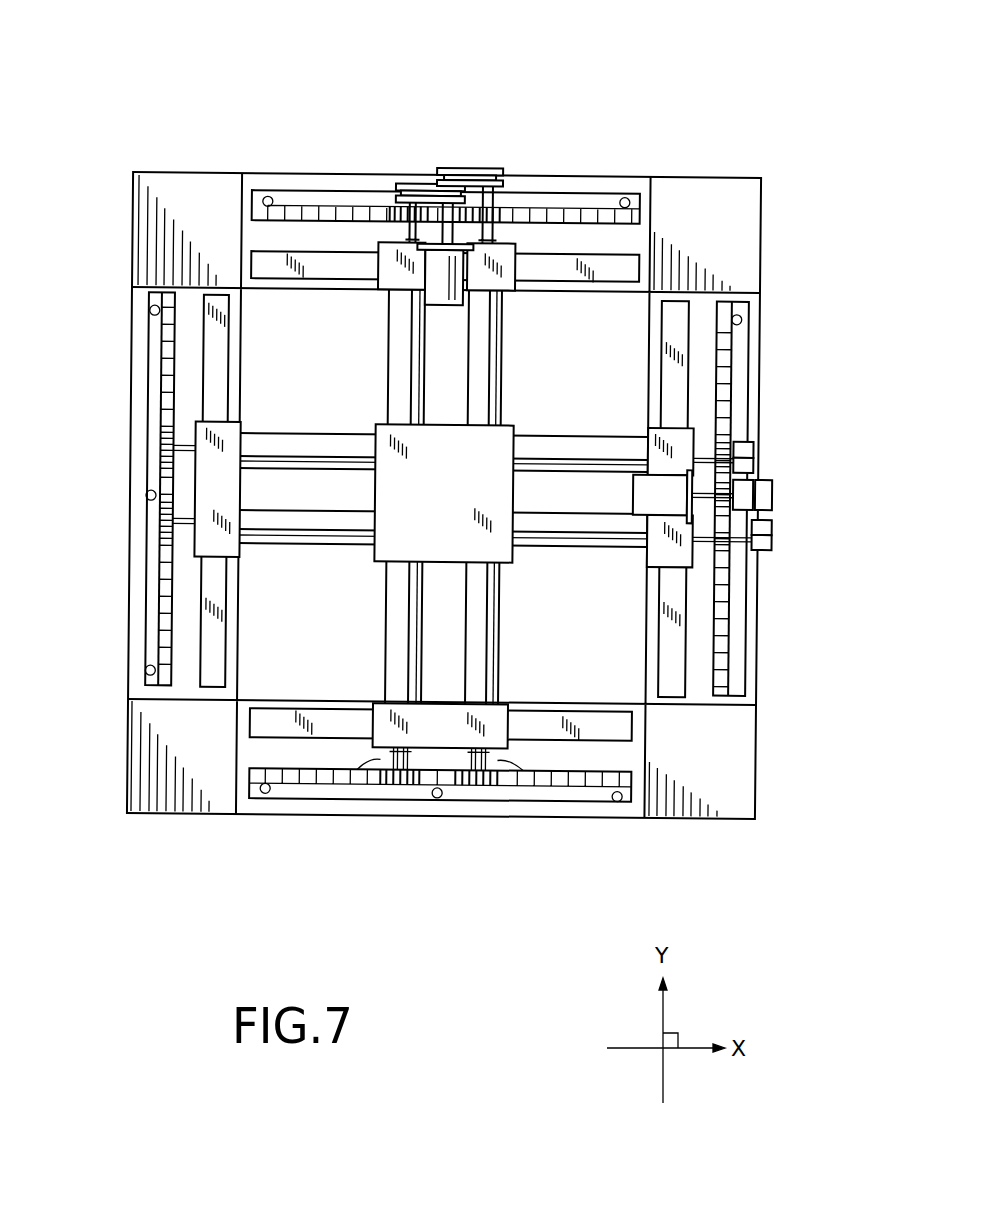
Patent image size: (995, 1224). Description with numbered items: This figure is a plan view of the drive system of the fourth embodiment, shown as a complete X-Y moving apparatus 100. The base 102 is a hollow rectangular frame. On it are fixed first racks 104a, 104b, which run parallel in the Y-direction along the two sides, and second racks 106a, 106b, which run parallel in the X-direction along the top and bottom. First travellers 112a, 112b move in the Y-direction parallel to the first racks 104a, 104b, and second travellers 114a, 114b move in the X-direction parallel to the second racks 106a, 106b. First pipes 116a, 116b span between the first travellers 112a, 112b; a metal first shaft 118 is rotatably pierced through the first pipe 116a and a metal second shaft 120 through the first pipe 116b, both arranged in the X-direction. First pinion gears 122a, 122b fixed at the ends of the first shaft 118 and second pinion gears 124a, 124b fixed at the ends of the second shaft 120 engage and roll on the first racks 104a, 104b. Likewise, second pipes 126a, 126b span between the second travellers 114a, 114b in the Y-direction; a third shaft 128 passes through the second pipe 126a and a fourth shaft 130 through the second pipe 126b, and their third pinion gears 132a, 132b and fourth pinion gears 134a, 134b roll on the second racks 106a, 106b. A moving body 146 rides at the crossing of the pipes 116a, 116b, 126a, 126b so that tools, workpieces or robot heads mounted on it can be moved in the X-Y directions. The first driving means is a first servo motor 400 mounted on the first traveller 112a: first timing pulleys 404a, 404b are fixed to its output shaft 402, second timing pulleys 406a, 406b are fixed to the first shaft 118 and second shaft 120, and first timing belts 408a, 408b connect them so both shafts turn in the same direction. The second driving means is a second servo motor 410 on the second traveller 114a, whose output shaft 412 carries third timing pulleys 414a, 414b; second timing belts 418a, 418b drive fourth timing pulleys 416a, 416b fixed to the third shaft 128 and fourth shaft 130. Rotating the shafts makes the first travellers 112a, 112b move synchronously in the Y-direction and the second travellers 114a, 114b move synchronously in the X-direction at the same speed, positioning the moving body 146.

The positioning apparatus 100 is at (456, 473).
The base 102 is at (764, 745).
The first rack 104a is at (732, 335).
The first rack 104b is at (172, 343).
The second rack 106a is at (253, 212).
The second rack 106b is at (300, 742).
The first traveller 112a is at (687, 603).
The first traveller 112b is at (218, 558).
The second traveller 114a is at (513, 268).
The second traveller 114b is at (448, 748).
The first pipe 116a is at (332, 437).
The first pipe 116b is at (333, 540).
The first shaft 118 is at (185, 440).
The second shaft 120 is at (187, 525).
The first pinion gear 122a is at (737, 425).
The first pinion gear 122b is at (165, 447).
The second pinion gear 124a is at (725, 555).
The second pinion gear 124b is at (165, 527).
The second pipe 126a is at (483, 654).
The second pipe 126b is at (397, 655).
The third shaft 128 is at (565, 800).
The fourth shaft 130 is at (355, 782).
The third pinion gear 132a is at (508, 213).
The third pinion gear 132b is at (480, 784).
The fourth pinion gear 134a is at (390, 210).
The fourth pinion gear 134b is at (400, 770).
The moving body 146 is at (442, 552).
The first servo motor 400 is at (633, 493).
The output shaft 402 is at (740, 468).
The first timing pulley 404a is at (755, 492).
The first timing pulley 404b is at (767, 505).
The second timing pulley 406a is at (748, 462).
The second timing pulley 406b is at (762, 535).
The first timing belt 408a is at (745, 445).
The first timing belt 408b is at (760, 548).
The second servo motor 410 is at (441, 307).
The output shaft 412 is at (452, 232).
The third timing pulley 414a is at (445, 187).
The third timing pulley 414b is at (410, 203).
The fourth timing pulley 416a is at (490, 186).
The fourth timing pulley 416b is at (395, 195).
The second timing belt 418a is at (467, 168).
The second timing belt 418b is at (393, 183).